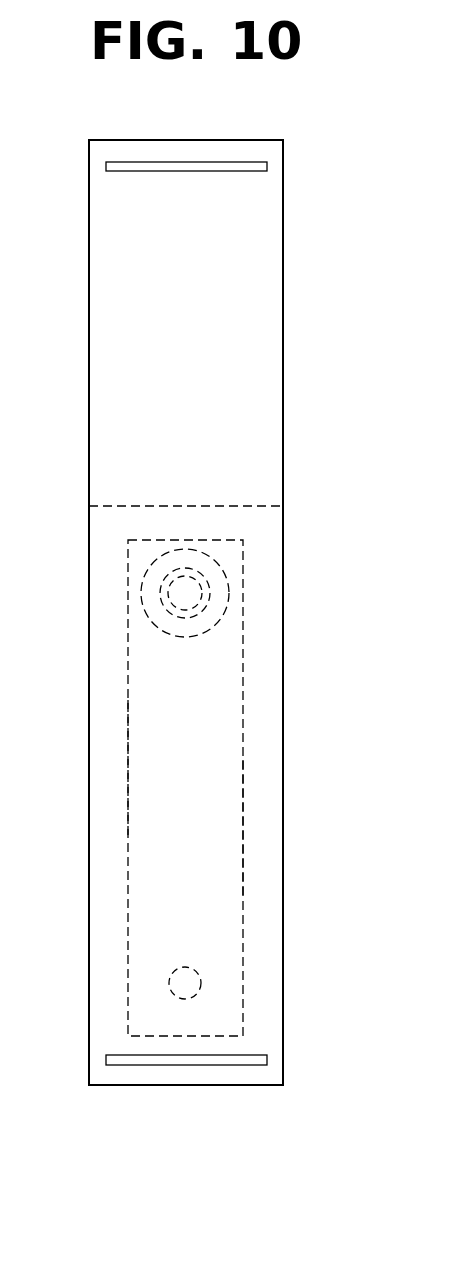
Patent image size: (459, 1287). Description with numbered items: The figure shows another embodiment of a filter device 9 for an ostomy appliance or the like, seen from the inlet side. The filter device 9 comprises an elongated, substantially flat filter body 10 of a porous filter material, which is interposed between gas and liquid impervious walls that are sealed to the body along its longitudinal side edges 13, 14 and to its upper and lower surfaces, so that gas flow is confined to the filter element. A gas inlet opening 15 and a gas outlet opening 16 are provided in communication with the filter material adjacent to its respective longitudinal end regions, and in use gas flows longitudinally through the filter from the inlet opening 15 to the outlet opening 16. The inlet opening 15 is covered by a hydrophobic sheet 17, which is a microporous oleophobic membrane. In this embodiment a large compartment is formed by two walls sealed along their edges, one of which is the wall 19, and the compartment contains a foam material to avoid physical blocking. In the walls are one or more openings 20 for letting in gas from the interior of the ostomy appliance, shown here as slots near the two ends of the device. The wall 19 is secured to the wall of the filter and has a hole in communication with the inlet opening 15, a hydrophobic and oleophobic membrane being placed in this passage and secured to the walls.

The filter device 9 is at (262, 762).
The filter body 10 is at (208, 673).
The longitudinal side edge 13 is at (242, 830).
The longitudinal side edge 14 is at (127, 767).
The gas inlet opening 15 is at (207, 583).
The gas outlet opening 16 is at (202, 983).
The hydrophobic sheet 17 is at (162, 555).
The wall 19 is at (232, 323).
The opening 20 is at (223, 171).